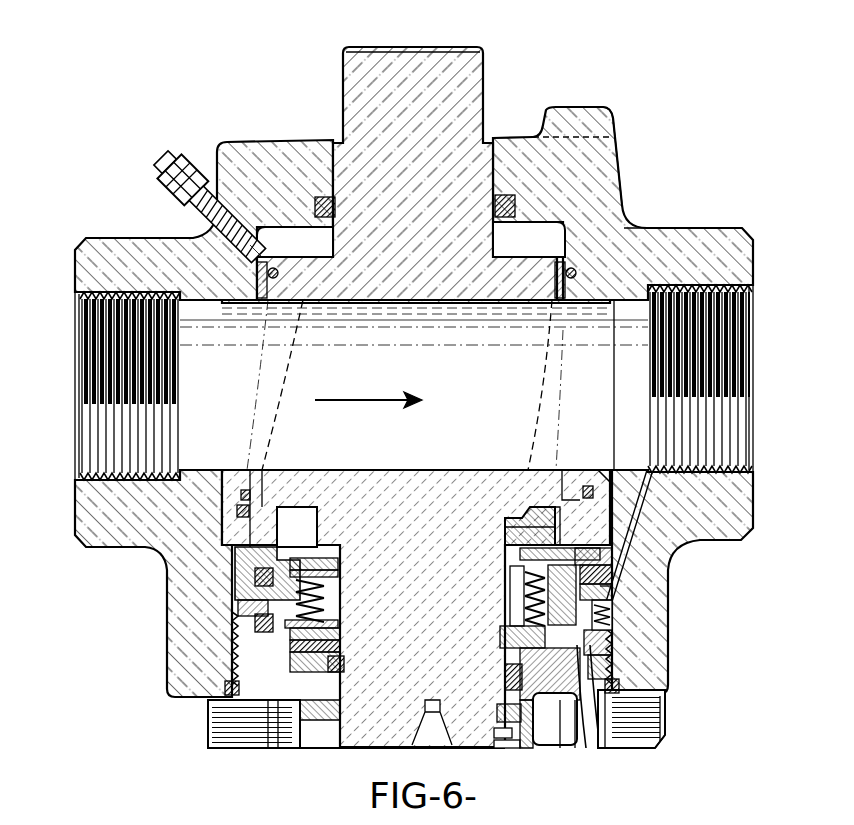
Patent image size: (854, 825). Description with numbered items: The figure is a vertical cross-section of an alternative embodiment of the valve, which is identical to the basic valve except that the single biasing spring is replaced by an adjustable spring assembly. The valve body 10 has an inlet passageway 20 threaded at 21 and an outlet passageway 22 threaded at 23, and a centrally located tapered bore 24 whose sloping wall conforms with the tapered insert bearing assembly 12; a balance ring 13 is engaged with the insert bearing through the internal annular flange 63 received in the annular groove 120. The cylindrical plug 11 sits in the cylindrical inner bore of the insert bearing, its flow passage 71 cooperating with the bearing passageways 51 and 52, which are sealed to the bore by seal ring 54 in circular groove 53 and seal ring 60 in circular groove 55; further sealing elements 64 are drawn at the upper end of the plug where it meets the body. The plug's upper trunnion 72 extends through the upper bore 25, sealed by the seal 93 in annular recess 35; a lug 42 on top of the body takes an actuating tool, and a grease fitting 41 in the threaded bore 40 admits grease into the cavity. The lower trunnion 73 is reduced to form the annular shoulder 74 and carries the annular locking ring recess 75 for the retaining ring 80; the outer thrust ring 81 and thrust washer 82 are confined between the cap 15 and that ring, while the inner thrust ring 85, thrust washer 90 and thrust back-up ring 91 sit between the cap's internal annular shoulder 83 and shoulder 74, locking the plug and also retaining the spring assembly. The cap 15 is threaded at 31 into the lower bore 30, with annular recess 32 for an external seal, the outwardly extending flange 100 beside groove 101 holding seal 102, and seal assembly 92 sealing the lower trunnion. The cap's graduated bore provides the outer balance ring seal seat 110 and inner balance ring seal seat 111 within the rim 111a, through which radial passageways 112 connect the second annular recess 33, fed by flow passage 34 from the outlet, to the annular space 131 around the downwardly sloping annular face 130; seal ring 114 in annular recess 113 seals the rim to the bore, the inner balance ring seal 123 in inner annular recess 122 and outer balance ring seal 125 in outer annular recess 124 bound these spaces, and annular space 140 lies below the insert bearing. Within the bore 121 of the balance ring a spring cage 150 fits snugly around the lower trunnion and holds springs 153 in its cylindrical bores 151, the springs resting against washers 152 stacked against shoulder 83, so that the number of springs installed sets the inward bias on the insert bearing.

The valve body 10 is at (278, 140).
The cylindrical plug 11 is at (483, 75).
The upper trunnion 72 is at (470, 95).
The upper bore 25 is at (493, 150).
The lug 42 is at (605, 122).
The seal 93 is at (516, 205).
The annular recess 35 is at (520, 222).
The tapered bore 24 is at (624, 224).
The outlet thread 23 is at (650, 290).
The grease fitting 41 is at (205, 162).
The internally threaded bore 40 is at (250, 232).
The seal ring 64 is at (268, 292).
The flow passage 71 is at (430, 303).
The inlet passageway 20 is at (208, 403).
The outlet passageway 22 is at (567, 394).
The inlet thread 21 is at (115, 470).
The circular groove 53 is at (243, 492).
The insert bearing passageway 51 is at (262, 472).
The tapered insert bearing assembly 12 is at (282, 474).
The balance ring 13 is at (350, 500).
The internal annular flange 63 is at (555, 517).
The insert bearing passageway 52 is at (570, 468).
The circular groove 55 is at (588, 485).
The seal ring 60 is at (608, 480).
The flow passage 34 is at (645, 490).
The seal ring 54 is at (236, 512).
The lower bore 30 is at (242, 555).
The annular space 131 is at (248, 603).
The internal thread 31 is at (232, 660).
The annular recess 32 is at (226, 692).
The inner annular recess 122 is at (316, 560).
The inner balance ring seal 123 is at (320, 575).
The bore 121 is at (305, 592).
The outer annular recess 124 is at (292, 618).
The inner thrust ring 85 is at (338, 634).
The thrust washer 90 is at (340, 647).
The thrust back-up ring 91 is at (340, 663).
The annular groove 120 is at (505, 528).
The inner balance ring seal seat 111 is at (575, 560).
The spring cage 150 is at (515, 585).
The cylindrical bores 151 is at (522, 600).
The springs 153 is at (522, 615).
The annular shoulder 74 is at (502, 630).
The seal assembly 92 is at (505, 670).
The thrust washer 82 is at (498, 712).
The annular locking ring recess 75 is at (497, 732).
The lower trunnion 73 is at (372, 742).
The retaining ring 80 is at (500, 748).
The outer thrust ring 81 is at (527, 748).
The cap 15 is at (566, 748).
The internal annular shoulder 83 is at (585, 700).
The outer balance ring seal seat 110 is at (622, 743).
The washers 152 is at (555, 719).
The annular space 140 is at (612, 552).
The rim 111a is at (610, 568).
The seal ring 114 is at (603, 583).
The annular recess 113 is at (608, 600).
The second annular recess 33 is at (605, 592).
The radial passageways 112 is at (605, 630).
The downwardly sloping annular face 130 is at (615, 650).
The outer balance ring seal 125 is at (623, 682).
The seal 102 is at (655, 700).
The outwardly extending flange 100 is at (660, 712).
The groove 101 is at (655, 722).